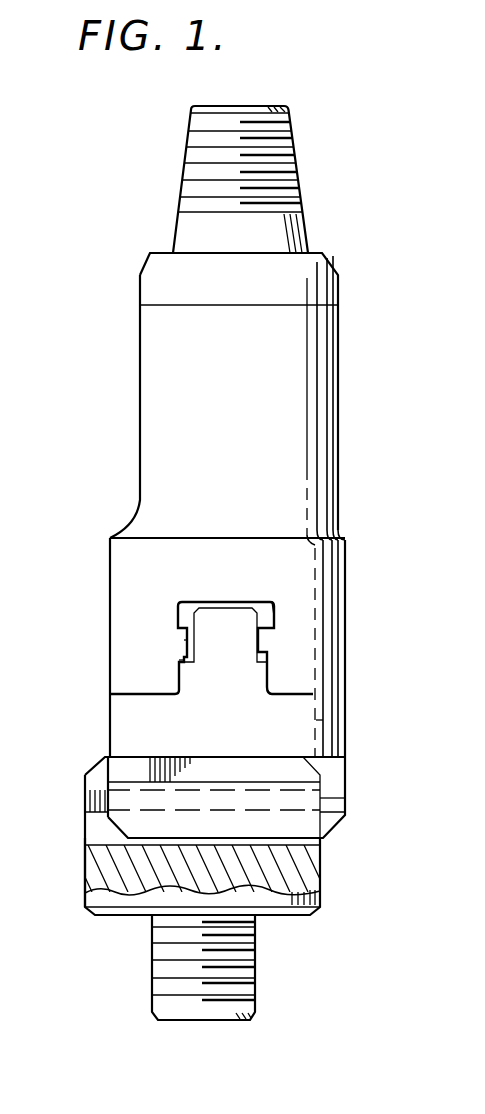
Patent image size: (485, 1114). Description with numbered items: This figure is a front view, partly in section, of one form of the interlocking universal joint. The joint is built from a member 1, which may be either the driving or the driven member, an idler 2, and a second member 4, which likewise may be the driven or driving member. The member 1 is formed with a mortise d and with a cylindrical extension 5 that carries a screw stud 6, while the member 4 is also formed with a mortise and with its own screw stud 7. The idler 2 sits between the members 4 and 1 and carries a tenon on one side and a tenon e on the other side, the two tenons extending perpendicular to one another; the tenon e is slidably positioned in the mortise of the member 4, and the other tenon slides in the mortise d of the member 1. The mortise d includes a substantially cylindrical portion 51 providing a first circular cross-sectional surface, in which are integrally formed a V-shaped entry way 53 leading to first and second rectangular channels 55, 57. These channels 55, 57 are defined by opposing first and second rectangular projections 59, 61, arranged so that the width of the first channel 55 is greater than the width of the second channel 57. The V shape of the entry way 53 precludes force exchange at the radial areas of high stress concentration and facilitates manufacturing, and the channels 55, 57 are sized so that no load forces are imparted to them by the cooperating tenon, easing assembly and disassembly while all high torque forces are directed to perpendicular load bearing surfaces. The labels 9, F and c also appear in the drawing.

The member 1 is at (312, 611).
The idler 2 is at (363, 110).
The member 4 is at (96, 872).
The cylindrical extension 5 is at (322, 375).
The screw stud 6 is at (193, 160).
The screw stud 7 is at (152, 982).
The T-shaped slot insert 9 is at (218, 632).
The substantially cylindrical portion 51 is at (348, 546).
The V shaped entry way 53 is at (278, 688).
The first rectangular channel 55 is at (273, 603).
The second rectangular channel 57 is at (183, 658).
The first rectangular projection 59 is at (270, 645).
The second rectangular projection 61 is at (183, 643).
The flange nut F is at (96, 827).
The wall dimension c is at (317, 723).
The mortise d is at (177, 615).
The tenon e is at (333, 800).